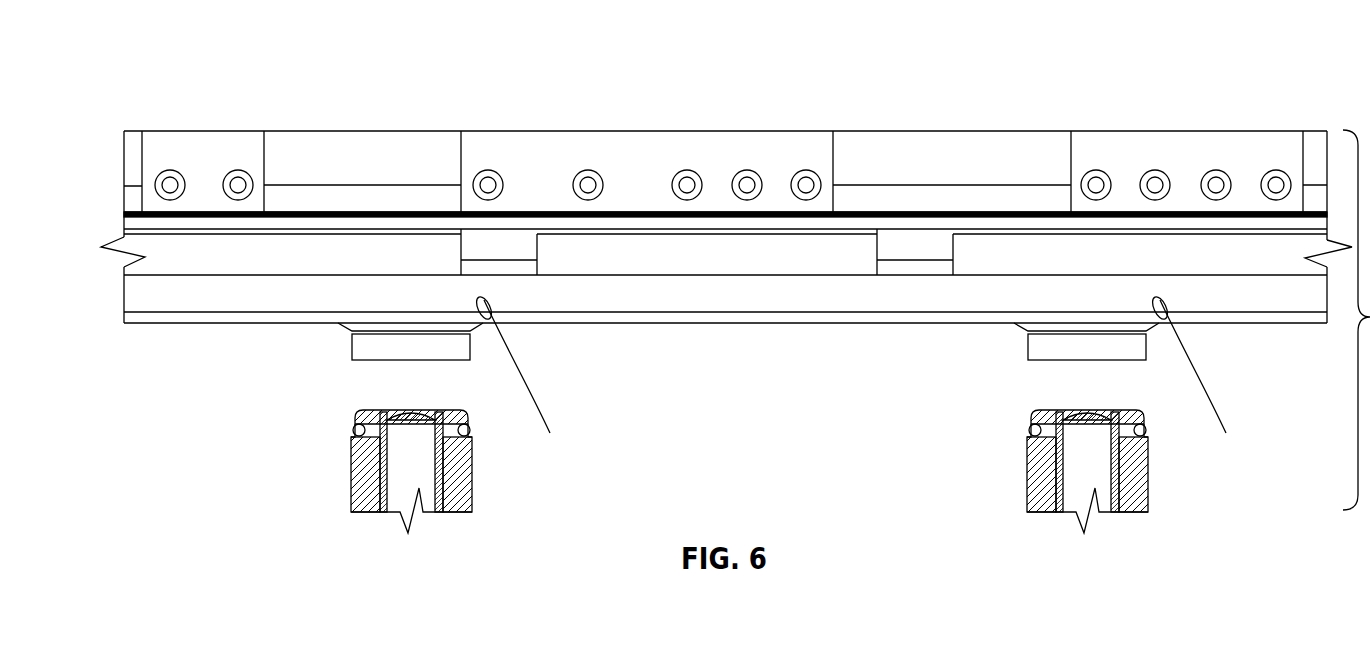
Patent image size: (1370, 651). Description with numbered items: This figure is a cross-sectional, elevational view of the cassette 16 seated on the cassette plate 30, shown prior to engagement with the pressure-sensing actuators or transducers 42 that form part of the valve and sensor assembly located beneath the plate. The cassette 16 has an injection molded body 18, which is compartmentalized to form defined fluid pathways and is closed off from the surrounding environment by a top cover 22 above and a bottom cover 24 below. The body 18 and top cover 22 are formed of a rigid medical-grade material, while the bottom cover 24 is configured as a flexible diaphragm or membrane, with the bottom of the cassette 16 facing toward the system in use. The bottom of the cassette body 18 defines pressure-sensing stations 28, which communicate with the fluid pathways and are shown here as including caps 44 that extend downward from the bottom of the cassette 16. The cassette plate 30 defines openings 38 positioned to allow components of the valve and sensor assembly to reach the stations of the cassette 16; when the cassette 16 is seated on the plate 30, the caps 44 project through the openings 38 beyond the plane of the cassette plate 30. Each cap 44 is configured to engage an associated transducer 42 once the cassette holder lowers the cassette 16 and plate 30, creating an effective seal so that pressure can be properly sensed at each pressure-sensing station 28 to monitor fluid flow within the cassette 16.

The cassette 16 is at (1292, 185).
The cassette body 18 is at (137, 222).
The top cover 22 is at (1152, 129).
The bottom cover 24 is at (1272, 312).
The pressure-sensing station 28 is at (353, 316).
The cassette plate 30 is at (1220, 318).
The opening 38 is at (858, 382).
The pressure-sensing actuator or transducer 42 is at (339, 478).
The cap 44 is at (370, 353).